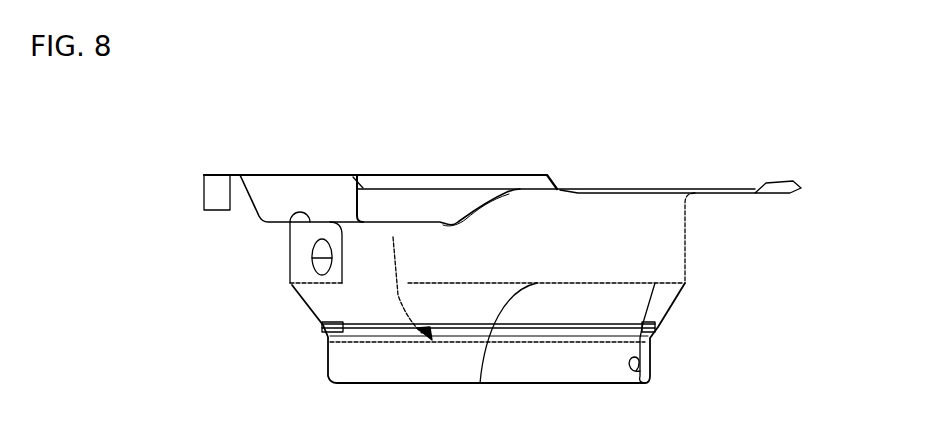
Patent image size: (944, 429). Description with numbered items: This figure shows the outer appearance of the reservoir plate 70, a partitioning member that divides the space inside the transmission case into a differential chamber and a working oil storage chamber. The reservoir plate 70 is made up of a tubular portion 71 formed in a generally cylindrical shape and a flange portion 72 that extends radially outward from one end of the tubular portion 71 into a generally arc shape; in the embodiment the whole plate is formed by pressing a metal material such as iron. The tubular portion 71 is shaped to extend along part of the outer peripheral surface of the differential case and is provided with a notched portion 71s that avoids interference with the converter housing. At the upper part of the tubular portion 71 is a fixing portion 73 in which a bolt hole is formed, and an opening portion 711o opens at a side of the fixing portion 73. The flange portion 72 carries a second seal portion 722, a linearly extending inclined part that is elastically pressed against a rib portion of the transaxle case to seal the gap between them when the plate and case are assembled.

The reservoir plate 70 is at (270, 166).
The tubular portion 71 is at (323, 299).
The opening portion 711o is at (318, 259).
The flange portion 72 is at (725, 193).
The second seal portion 722 is at (798, 185).
The fixing portion 73 is at (357, 323).
The notched portion 71s is at (640, 371).